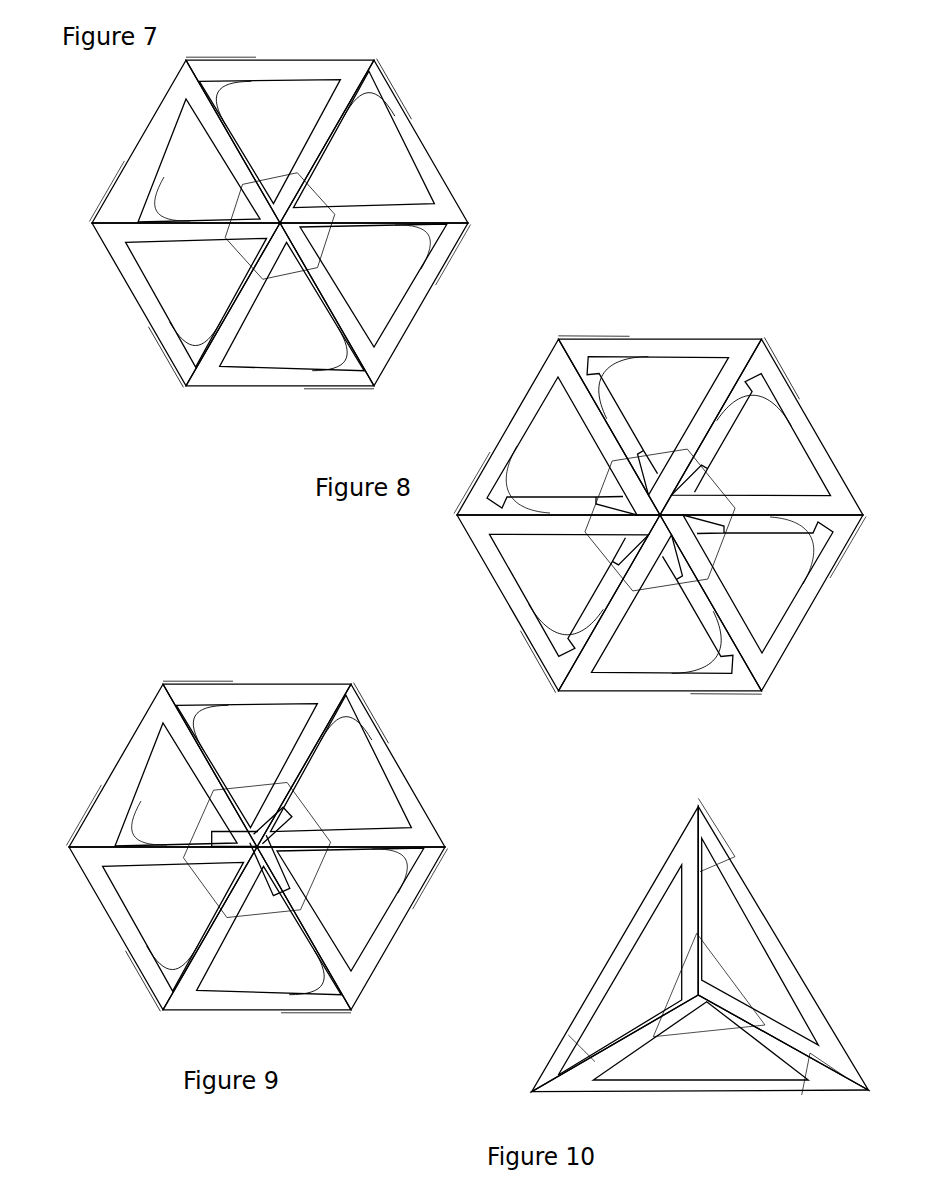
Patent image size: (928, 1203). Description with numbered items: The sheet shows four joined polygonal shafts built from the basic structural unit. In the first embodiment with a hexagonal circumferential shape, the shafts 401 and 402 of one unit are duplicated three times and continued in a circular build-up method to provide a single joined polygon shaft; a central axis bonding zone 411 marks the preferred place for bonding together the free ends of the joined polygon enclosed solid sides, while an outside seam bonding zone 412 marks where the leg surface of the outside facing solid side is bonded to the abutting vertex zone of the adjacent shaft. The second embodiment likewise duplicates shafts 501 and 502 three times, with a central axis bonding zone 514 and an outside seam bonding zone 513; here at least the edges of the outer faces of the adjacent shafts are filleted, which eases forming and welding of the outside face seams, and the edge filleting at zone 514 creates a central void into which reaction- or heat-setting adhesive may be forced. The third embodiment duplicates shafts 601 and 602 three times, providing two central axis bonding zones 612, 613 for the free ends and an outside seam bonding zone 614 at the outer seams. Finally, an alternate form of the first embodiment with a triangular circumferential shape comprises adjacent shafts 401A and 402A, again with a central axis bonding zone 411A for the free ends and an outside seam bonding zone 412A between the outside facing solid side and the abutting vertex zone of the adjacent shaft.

In FIG. 7, the shaft 401 is at (150, 120).
In FIG. 7, the shaft 402 is at (340, 60).
In FIG. 7, the outside seam bonding zone 412 is at (362, 103).
In FIG. 7, the central axis bonding zone 411 is at (305, 195).
In FIG. 8, the shaft 501 is at (507, 405).
In FIG. 8, the shaft 502 is at (680, 331).
In FIG. 8, the outside seam bonding zone 513 is at (762, 392).
In FIG. 8, the central axis bonding zone 514 is at (708, 483).
In FIG. 9, the shaft 601 is at (110, 748).
In FIG. 9, the shaft 602 is at (258, 677).
In FIG. 9, the outside seam bonding zone 614 is at (340, 722).
In FIG. 9, the central axis bonding zone 613 is at (302, 818).
In FIG. 9, the central axis bonding zone 612 is at (305, 872).
In FIG. 10, the shaft 401A is at (640, 886).
In FIG. 10, the shaft 402A is at (783, 920).
In FIG. 10, the outside seam bonding zone 412A is at (706, 853).
In FIG. 10, the central axis bonding zone 411A is at (715, 1025).